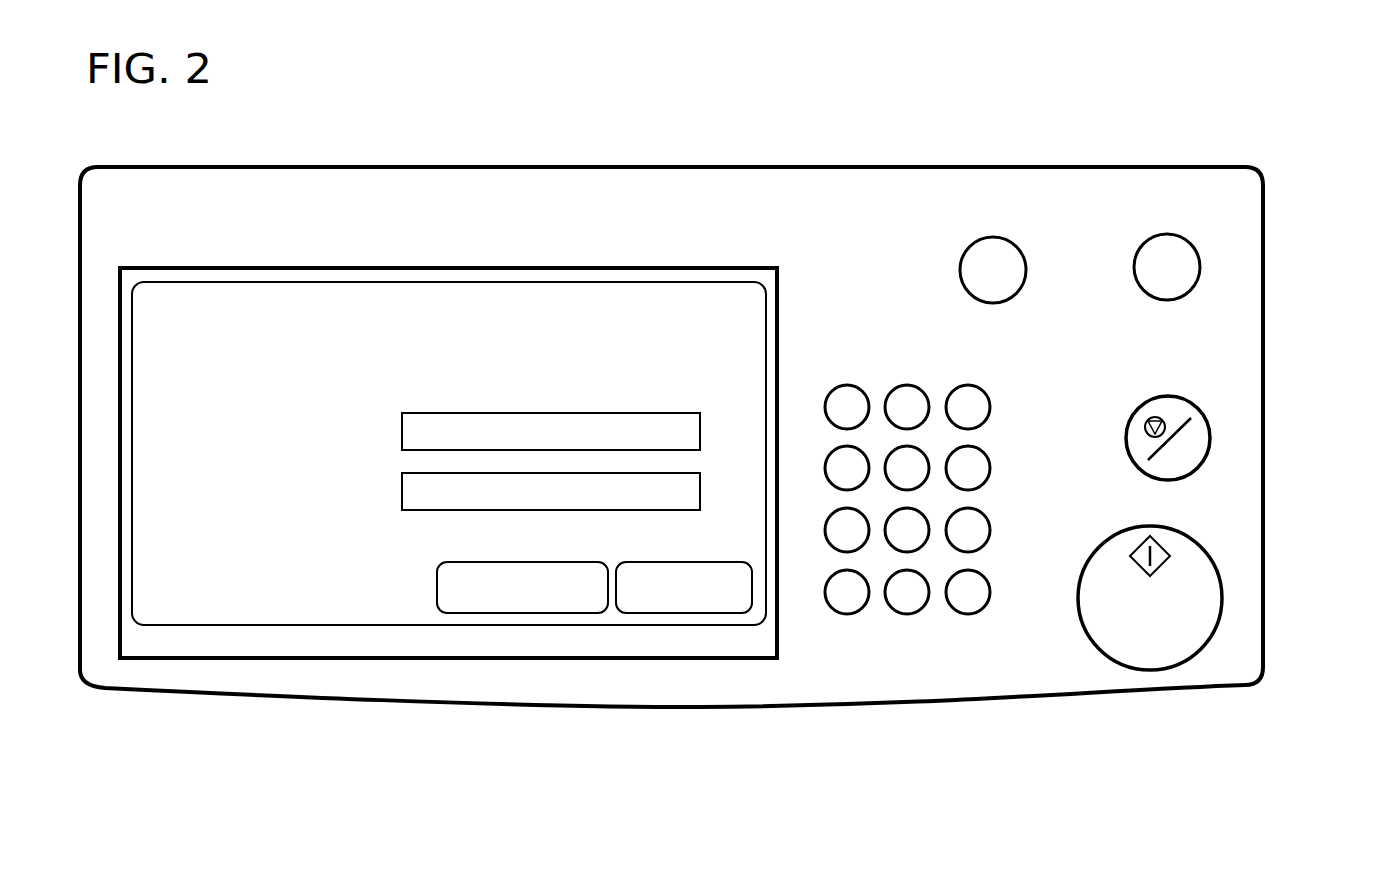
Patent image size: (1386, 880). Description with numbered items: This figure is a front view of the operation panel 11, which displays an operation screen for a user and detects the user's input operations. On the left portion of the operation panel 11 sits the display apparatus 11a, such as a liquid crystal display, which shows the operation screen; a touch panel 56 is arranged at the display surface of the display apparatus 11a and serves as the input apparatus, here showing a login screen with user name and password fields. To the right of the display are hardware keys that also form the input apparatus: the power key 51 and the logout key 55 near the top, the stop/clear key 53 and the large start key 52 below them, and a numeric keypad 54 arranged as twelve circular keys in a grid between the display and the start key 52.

The operation panel 11 is at (1265, 183).
The display apparatus 11a is at (720, 268).
The touch panel 56 is at (498, 277).
The logout key 55 is at (1015, 268).
The power key 51 is at (1190, 265).
The stop/clear key 53 is at (1208, 433).
The start key 52 is at (1147, 653).
The numeric keypad 54 is at (828, 632).